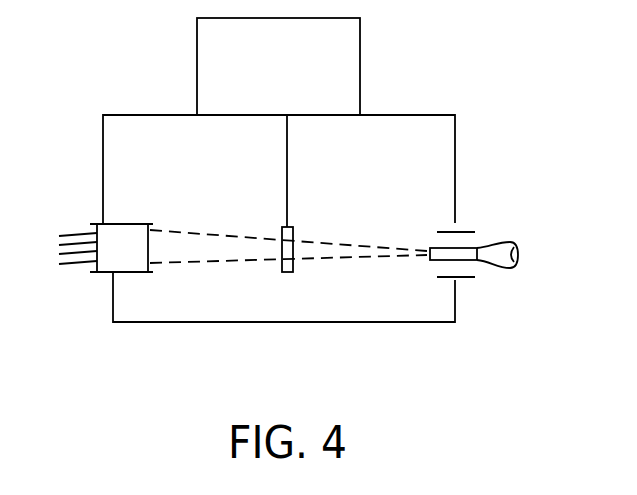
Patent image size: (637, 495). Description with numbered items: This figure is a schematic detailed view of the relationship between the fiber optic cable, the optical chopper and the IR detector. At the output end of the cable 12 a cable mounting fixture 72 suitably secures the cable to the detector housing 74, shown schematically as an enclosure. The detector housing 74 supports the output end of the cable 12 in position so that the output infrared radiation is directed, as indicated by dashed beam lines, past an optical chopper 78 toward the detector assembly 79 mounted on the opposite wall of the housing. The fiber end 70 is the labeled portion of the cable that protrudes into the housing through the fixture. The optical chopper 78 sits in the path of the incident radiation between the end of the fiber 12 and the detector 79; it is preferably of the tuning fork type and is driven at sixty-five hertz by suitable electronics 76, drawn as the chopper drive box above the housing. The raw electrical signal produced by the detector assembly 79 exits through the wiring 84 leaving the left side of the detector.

The cable 12 is at (530, 229).
The optical fiber 70 is at (427, 263).
The cable mounting fixture 72 is at (472, 230).
The detector housing 74 is at (285, 322).
The electronics 76 is at (360, 77).
The optical chopper 78 is at (300, 230).
The detector assembly 79 is at (150, 214).
The wiring 84 is at (55, 273).